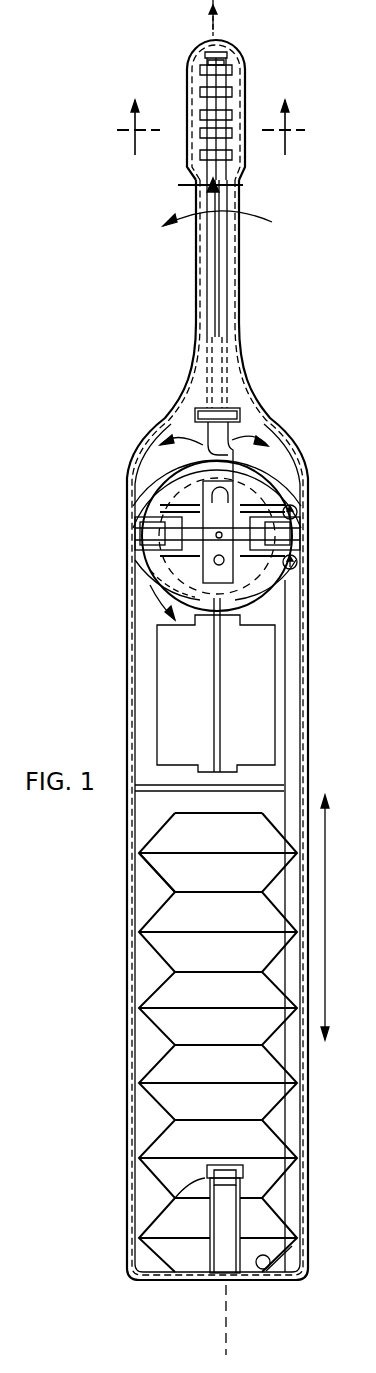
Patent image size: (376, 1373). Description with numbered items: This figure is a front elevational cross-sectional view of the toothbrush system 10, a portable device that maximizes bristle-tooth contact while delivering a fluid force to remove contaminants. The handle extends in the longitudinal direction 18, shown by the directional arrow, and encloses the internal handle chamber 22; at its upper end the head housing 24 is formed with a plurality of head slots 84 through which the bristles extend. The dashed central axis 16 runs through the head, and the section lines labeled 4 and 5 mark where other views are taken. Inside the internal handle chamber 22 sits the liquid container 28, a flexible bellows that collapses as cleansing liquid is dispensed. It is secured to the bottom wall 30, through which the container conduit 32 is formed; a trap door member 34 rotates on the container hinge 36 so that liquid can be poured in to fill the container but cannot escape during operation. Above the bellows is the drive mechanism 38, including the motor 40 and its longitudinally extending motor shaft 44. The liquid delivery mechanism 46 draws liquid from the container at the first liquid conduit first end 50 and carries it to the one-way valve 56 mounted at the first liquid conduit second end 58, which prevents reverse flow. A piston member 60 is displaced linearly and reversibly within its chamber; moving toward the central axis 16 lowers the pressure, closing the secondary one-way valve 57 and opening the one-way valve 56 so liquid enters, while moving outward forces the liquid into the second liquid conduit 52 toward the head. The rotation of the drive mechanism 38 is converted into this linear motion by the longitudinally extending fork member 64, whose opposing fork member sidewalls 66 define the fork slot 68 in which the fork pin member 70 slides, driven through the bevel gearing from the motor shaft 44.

The toothbrush system 10 is at (272, 278).
The central axis 16 is at (218, 18).
The head slots 84 is at (232, 92).
The section line 5 is at (211, 113).
The section line 4 is at (211, 134).
The head housing 24 is at (196, 313).
The second liquid conduit 52 is at (280, 468).
The piston member 60 is at (262, 470).
The fork member 64 is at (127, 482).
The drive mechanism 38 is at (175, 607).
The fork pin member 70 is at (207, 598).
The liquid delivery mechanism 46 is at (298, 520).
The fork slot 68 is at (140, 512).
The one-way valve 56 is at (300, 562).
The secondary one-way valve 57 is at (295, 505).
The first liquid conduit second end 58 is at (298, 568).
The fork member sidewalls 66 is at (133, 572).
The motor 40 is at (170, 690).
The motor shaft 44 is at (222, 700).
The longitudinal direction 18 is at (330, 862).
The internal handle chamber 22 is at (150, 975).
The liquid container 28 is at (165, 908).
The container conduit 32 is at (228, 1265).
The trap door member 34 is at (225, 1165).
The container hinge 36 is at (155, 1168).
The first liquid conduit first end 50 is at (298, 1255).
The bottom wall 30 is at (300, 1278).